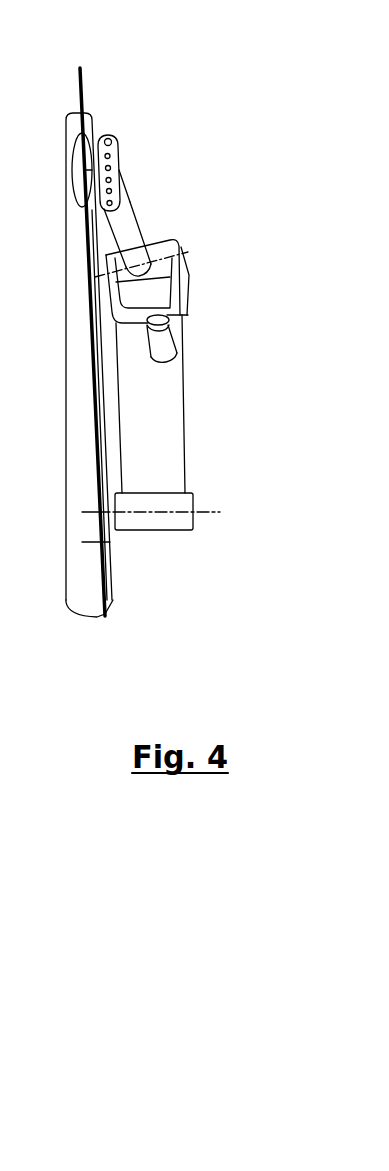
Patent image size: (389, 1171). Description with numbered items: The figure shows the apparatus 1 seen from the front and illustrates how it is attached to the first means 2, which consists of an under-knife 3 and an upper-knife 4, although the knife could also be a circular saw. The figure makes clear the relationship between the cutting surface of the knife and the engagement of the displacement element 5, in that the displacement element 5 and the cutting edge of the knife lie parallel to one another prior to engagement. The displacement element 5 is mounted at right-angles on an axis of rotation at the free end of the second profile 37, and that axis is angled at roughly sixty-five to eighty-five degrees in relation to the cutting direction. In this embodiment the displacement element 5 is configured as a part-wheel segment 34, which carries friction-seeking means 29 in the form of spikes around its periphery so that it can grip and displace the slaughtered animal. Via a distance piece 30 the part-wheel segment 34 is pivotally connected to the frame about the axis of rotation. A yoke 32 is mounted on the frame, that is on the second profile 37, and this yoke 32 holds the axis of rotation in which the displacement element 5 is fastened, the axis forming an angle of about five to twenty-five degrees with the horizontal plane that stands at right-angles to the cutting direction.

The apparatus 1 is at (222, 267).
The first means 2 is at (70, 107).
The under-knife 3 is at (72, 228).
The upper-knife 4 is at (84, 293).
The displacement element 5 is at (137, 200).
The friction-seeking means 29 is at (112, 134).
The distance piece 30 is at (125, 223).
The yoke 32 is at (180, 316).
The part-wheel segment 34 is at (120, 158).
The second profile 37 is at (152, 420).